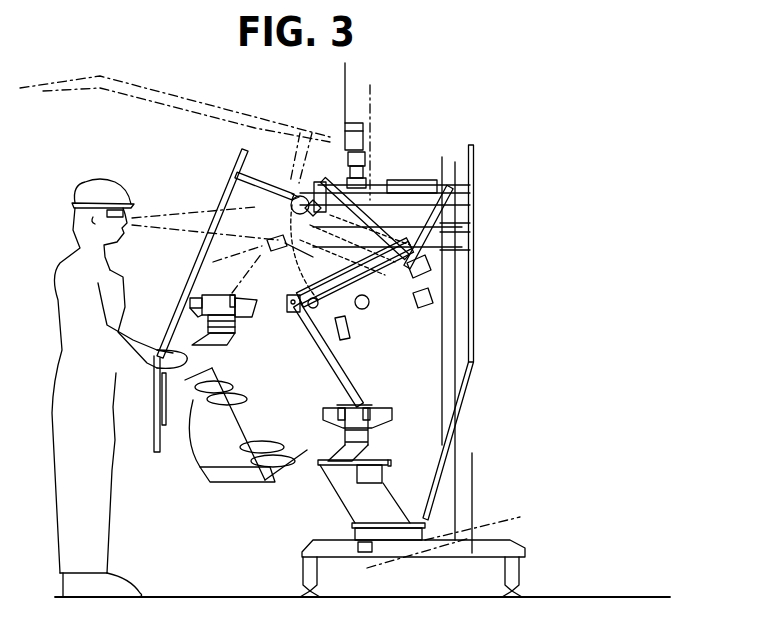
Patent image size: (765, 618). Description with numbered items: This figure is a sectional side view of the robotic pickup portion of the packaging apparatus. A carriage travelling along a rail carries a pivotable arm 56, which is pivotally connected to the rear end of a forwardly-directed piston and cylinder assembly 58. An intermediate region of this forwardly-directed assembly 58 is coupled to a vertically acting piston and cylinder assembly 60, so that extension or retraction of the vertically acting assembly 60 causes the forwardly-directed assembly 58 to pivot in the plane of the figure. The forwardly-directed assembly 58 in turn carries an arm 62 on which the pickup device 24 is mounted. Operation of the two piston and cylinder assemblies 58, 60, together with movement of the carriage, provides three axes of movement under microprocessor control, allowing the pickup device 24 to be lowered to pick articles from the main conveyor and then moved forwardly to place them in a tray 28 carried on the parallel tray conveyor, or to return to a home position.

The pickup device 24 is at (380, 436).
The tray 28 is at (200, 470).
The pivotable arm 56 is at (468, 224).
The forwardly-directed piston and cylinder assembly 58 is at (358, 316).
The vertically acting piston and cylinder assembly 60 is at (374, 164).
The arm 62 is at (333, 373).